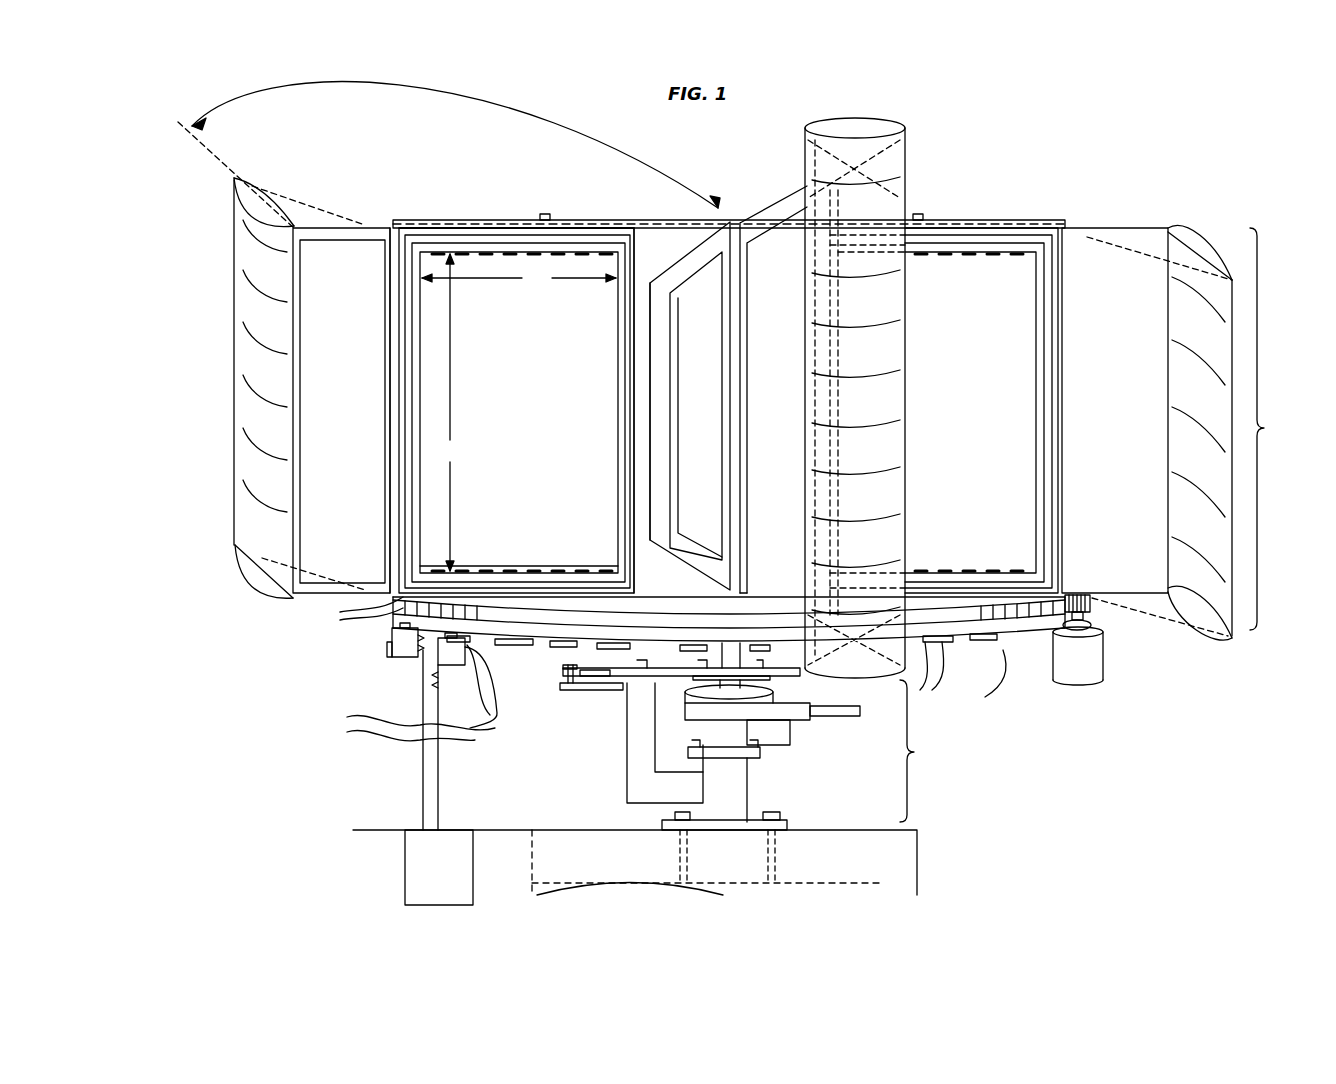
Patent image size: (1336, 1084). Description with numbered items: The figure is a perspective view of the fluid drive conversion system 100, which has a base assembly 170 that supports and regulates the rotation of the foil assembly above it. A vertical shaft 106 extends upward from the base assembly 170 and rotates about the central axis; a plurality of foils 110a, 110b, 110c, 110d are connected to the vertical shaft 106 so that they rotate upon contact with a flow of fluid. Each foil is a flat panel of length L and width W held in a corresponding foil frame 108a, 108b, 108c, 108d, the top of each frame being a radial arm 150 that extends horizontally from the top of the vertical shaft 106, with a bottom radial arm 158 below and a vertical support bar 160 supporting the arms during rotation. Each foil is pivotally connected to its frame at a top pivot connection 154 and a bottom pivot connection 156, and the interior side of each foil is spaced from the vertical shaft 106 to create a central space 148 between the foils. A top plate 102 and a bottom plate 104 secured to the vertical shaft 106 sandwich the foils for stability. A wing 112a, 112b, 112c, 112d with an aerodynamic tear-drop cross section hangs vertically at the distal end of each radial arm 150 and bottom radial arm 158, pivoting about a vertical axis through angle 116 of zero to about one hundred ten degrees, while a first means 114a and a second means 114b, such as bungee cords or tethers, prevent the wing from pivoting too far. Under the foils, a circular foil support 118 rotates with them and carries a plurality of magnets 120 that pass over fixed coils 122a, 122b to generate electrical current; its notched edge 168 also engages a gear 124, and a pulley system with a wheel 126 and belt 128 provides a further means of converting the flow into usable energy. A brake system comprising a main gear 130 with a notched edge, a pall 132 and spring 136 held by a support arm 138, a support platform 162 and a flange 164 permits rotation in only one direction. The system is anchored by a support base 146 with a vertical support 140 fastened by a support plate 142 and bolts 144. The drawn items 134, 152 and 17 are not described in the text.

The fluid drive conversion system 100 is at (785, 195).
The top plate 102 is at (692, 220).
The bottom plate 104 is at (660, 602).
The vertical shaft 106 is at (735, 660).
The foil frame 108a is at (443, 222).
The foil frame 108b is at (790, 192).
The foil frame 108c is at (1010, 220).
The foil frame 108d is at (680, 257).
The foil 110a is at (518, 412).
The foil 110b is at (773, 525).
The foil 110c is at (974, 412).
The foil 110d is at (699, 406).
The wing 112a is at (240, 285).
The wing 112b is at (905, 175).
The wing 112c is at (1205, 238).
The wing 112d is at (657, 498).
The first means for preventing 114a is at (300, 205).
The second means for preventing 114b is at (318, 572).
The angle 116 is at (430, 110).
The foil support 118 is at (553, 640).
The magnets 120 is at (933, 679).
The coil 122a is at (403, 658).
The coil 122b is at (456, 668).
The gear 124 is at (1095, 602).
The wheel 126 is at (775, 690).
The belt 128 is at (840, 716).
The main gear 130 is at (690, 700).
The pall 132 is at (627, 690).
The mounting plate 134 is at (640, 664).
The spring 136 is at (593, 690).
The support arm 138 is at (627, 770).
The vertical support 140 is at (748, 790).
The support plate 142 is at (662, 824).
The bolts 144 is at (781, 814).
The support base 146 is at (635, 862).
The central space 148 is at (634, 234).
The radial arm 150 is at (494, 220).
The frame bottom member 152 is at (505, 572).
The top pivot connection 154 is at (546, 213).
The bottom pivot connection 156 is at (540, 632).
The bottom radial arm 158 is at (335, 602).
The vertical support bar 160 is at (382, 385).
The support platform 162 is at (575, 695).
The flange 164 is at (580, 693).
The notched edge 168 is at (987, 696).
The base assembly 170 is at (924, 751).
The section line 17 is at (1270, 429).